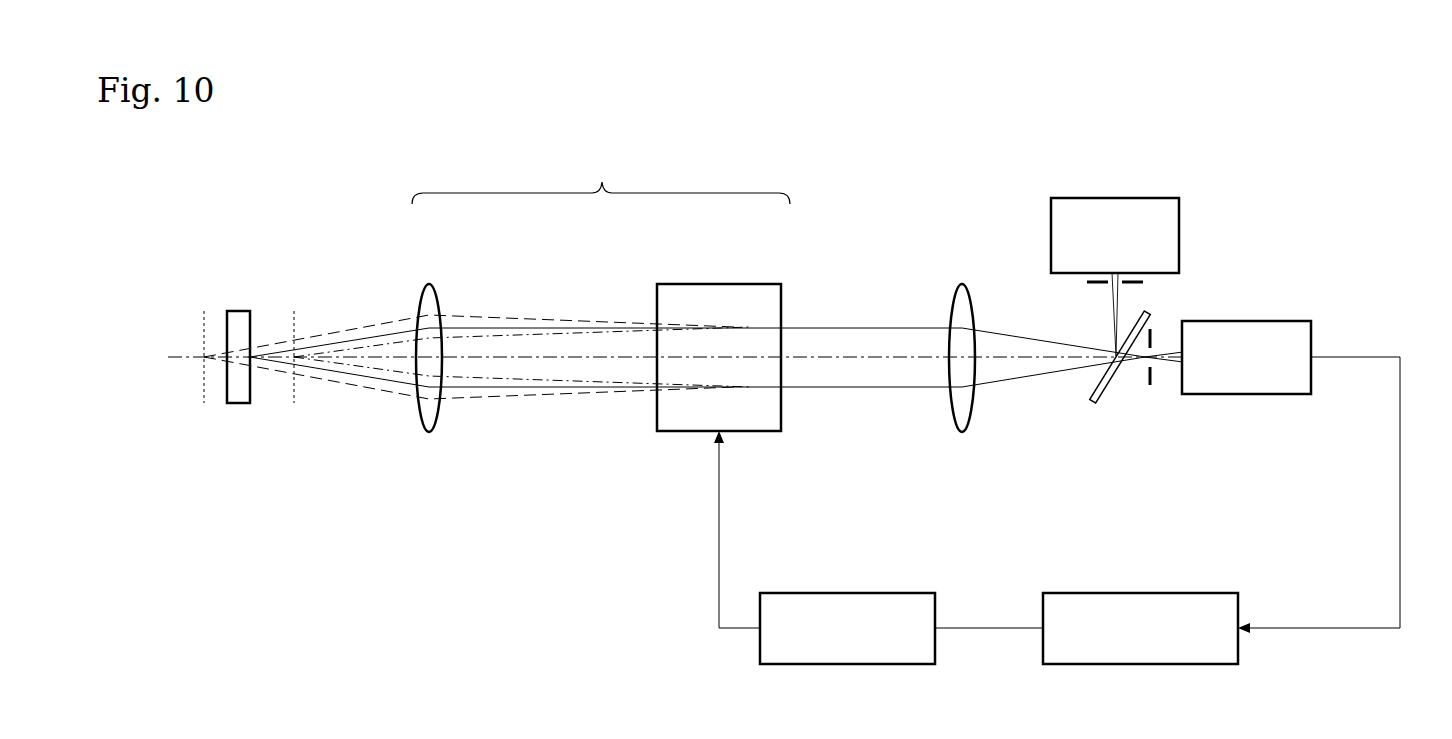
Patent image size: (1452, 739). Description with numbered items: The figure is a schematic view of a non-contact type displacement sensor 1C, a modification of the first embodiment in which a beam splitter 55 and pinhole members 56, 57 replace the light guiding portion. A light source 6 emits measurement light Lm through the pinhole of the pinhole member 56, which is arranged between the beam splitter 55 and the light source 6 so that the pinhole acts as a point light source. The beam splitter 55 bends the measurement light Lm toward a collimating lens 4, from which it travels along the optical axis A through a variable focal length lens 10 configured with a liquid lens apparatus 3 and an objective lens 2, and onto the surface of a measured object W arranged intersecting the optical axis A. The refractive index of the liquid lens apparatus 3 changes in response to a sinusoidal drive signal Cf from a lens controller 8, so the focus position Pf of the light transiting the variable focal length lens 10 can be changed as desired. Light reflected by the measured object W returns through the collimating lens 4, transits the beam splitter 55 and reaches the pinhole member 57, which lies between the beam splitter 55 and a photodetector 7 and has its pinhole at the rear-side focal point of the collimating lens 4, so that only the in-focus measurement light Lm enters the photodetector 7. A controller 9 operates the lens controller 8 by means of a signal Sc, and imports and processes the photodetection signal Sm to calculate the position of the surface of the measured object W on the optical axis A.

The non-contact type displacement sensor 1C is at (1204, 178).
The objective lens 2 is at (437, 298).
The liquid lens apparatus 3 is at (781, 300).
The collimating lens 4 is at (972, 318).
The light source 6 is at (1107, 198).
The photodetector 7 is at (1280, 394).
The lens controller 8 is at (797, 593).
The controller 9 is at (1209, 593).
The variable focal length lens 10 is at (601, 176).
The beam splitter 55 is at (1106, 403).
The pinhole member 56 is at (1143, 284).
The pinhole member 57 is at (1153, 373).
The measured object W is at (238, 311).
The focus position Pf is at (250, 357).
The measurement light Lm is at (372, 336).
The optical axis A is at (878, 357).
The drive signal Cf is at (721, 529).
The control signal Sc is at (989, 611).
The photodetection signal Sm is at (1341, 495).